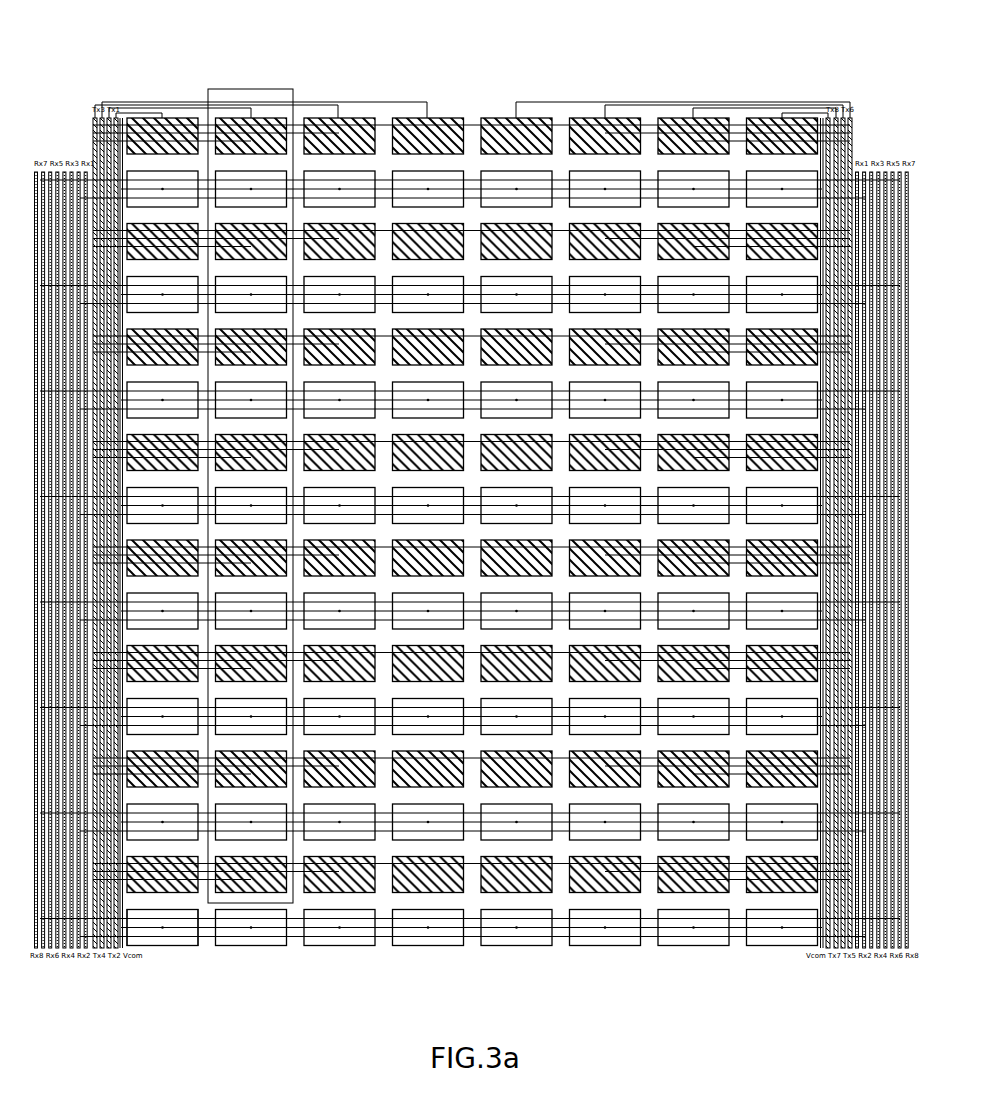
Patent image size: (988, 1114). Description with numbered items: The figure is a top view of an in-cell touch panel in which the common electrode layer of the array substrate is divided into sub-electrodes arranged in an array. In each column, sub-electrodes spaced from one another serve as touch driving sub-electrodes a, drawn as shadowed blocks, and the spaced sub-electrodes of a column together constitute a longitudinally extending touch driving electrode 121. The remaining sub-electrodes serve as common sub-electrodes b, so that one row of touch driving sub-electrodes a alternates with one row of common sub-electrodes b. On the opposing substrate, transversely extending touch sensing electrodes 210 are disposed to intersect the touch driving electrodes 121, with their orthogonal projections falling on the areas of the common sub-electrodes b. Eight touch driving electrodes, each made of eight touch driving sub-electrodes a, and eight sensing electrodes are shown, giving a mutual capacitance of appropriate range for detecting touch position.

The touch driving electrode 121 is at (268, 89).
The touch sensing electrode 210 is at (422, 938).
The touch driving sub-electrode a is at (279, 897).
The common sub-electrode b is at (178, 947).